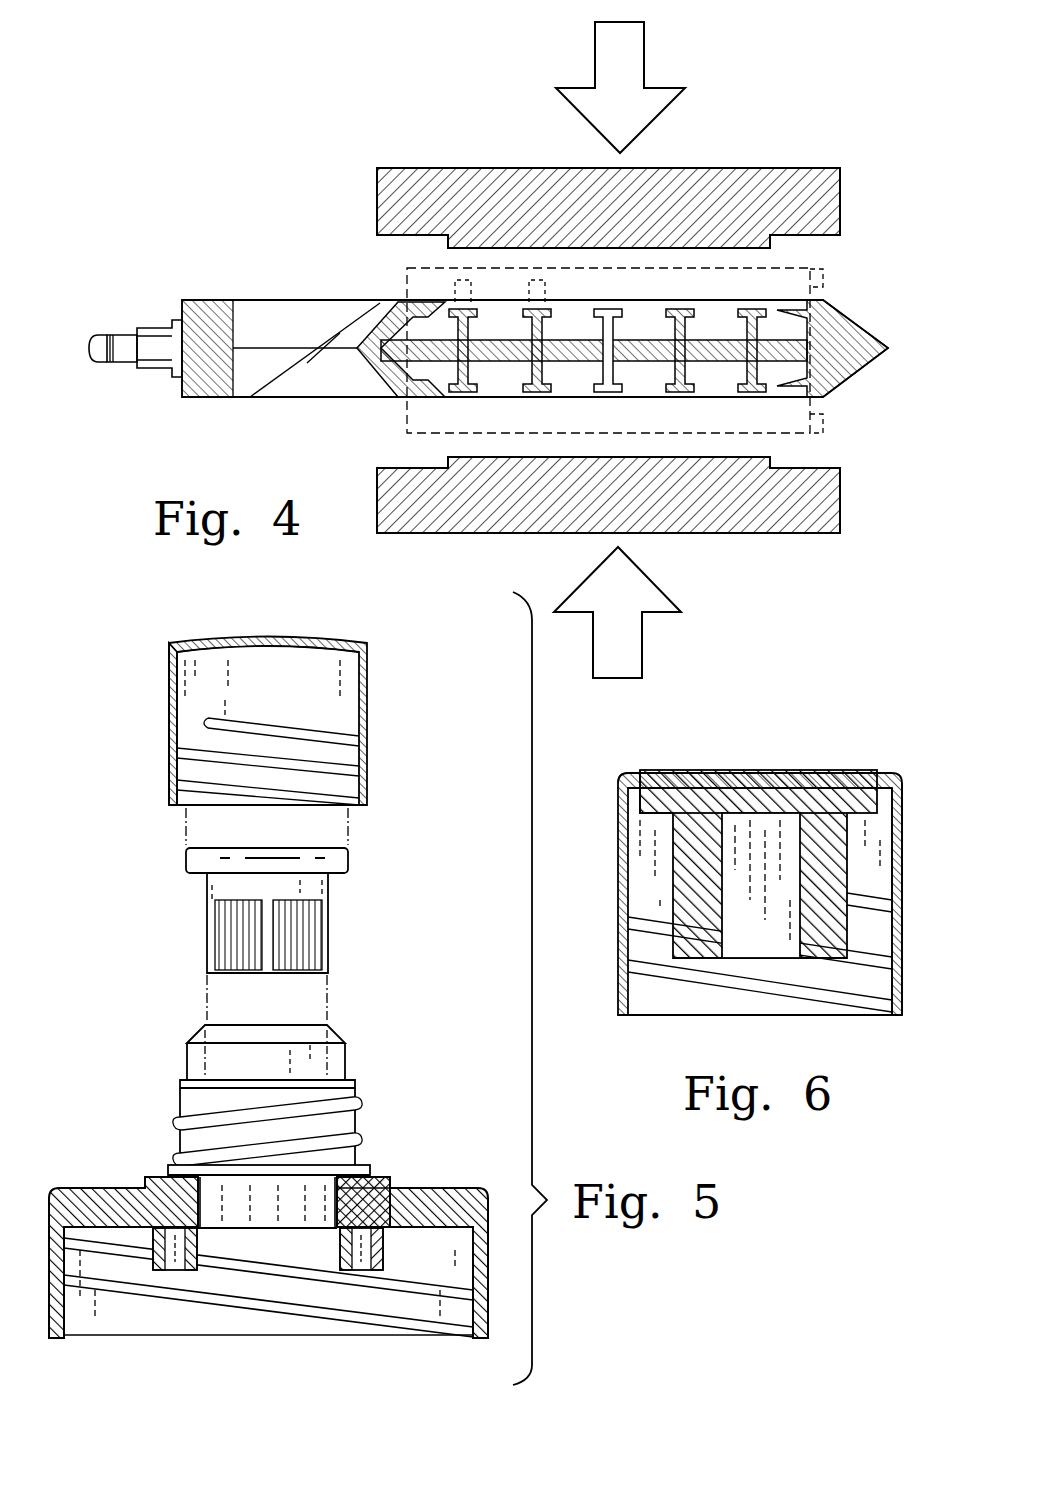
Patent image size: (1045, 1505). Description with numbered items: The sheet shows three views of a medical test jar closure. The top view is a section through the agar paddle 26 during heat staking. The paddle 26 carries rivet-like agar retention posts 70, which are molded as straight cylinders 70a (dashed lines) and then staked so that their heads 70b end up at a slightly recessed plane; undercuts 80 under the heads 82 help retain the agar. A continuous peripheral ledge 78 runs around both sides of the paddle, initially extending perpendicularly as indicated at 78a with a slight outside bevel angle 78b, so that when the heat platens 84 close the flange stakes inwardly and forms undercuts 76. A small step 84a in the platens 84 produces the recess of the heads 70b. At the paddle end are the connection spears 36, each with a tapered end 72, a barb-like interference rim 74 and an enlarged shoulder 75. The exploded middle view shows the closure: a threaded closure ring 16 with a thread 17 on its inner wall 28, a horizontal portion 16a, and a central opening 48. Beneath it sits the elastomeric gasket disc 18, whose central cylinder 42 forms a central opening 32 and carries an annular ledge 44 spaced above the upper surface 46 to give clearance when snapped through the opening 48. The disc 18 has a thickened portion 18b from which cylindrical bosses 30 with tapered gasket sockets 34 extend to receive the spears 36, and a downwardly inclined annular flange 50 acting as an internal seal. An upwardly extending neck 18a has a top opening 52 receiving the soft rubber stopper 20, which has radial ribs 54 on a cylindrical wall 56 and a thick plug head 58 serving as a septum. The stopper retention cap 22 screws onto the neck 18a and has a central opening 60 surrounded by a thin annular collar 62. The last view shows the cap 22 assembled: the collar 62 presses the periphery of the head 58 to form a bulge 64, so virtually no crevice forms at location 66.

In FIG. 5, the threaded closure ring 16 is at (277, 1246).
In FIG. 5, the horizontal portion 16a is at (107, 1186).
In FIG. 5, the thread 17 is at (300, 1303).
In FIG. 5, the gasket disc 18 is at (470, 1230).
In FIG. 5, the extending neck 18a is at (280, 1079).
In FIG. 5, the thickened portion 18b is at (140, 1230).
In FIG. 5, the stopper 20 is at (275, 894).
In FIG. 6, the stopper 20 is at (713, 833).
In FIG. 5, the stopper retention cap 22 is at (367, 725).
In FIG. 6, the stopper retention cap 22 is at (620, 963).
In FIG. 4, the agar paddle 26 is at (233, 160).
In FIG. 5, the inner wall 28 is at (460, 1305).
In FIG. 5, the cylindrical bosses 30 is at (172, 1268).
In FIG. 5, the central opening 32 is at (215, 1215).
In FIG. 5, the gasket sockets 34 is at (340, 1212).
In FIG. 4, the connection spears 36 is at (128, 392).
In FIG. 5, the central cylinder 42 is at (325, 1165).
In FIG. 5, the annular ledge 44 is at (360, 1173).
In FIG. 5, the upper surface 46 is at (440, 1190).
In FIG. 5, the central opening 48 is at (178, 1135).
In FIG. 5, the annular flange 50 is at (42, 1210).
In FIG. 5, the top opening 52 is at (310, 1055).
In FIG. 5, the ribs 54 is at (240, 948).
In FIG. 5, the cylindrical wall 56 is at (300, 940).
In FIG. 5, the plug head 58 is at (186, 862).
In FIG. 6, the plug head 58 is at (668, 800).
In FIG. 5, the central opening 60 is at (312, 640).
In FIG. 6, the central opening 60 is at (843, 770).
In FIG. 5, the annular collar 62 is at (190, 640).
In FIG. 6, the annular collar 62 is at (868, 783).
In FIG. 6, the bulge 64 is at (720, 768).
In FIG. 6, the location 66 is at (680, 773).
In FIG. 4, the agar retention posts 70 is at (407, 375).
In FIG. 4, the straight cylinders 70a is at (532, 280).
In FIG. 4, the heads 70b is at (690, 397).
In FIG. 4, the tapered ends 72 is at (95, 362).
In FIG. 4, the interference rim 74 is at (107, 335).
In FIG. 4, the shoulder 75 is at (157, 327).
In FIG. 4, the undercuts 76 is at (800, 332).
In FIG. 4, the peripheral ledge 78 is at (407, 383).
In FIG. 4, the perpendicular flange position 78a is at (400, 300).
In FIG. 4, the outside bevel angle 78b is at (823, 418).
In FIG. 4, the undercuts 80 is at (575, 387).
In FIG. 4, the heads 82 is at (510, 397).
In FIG. 4, the heat platens 84 is at (455, 195).
In FIG. 4, the small step 84a is at (780, 468).